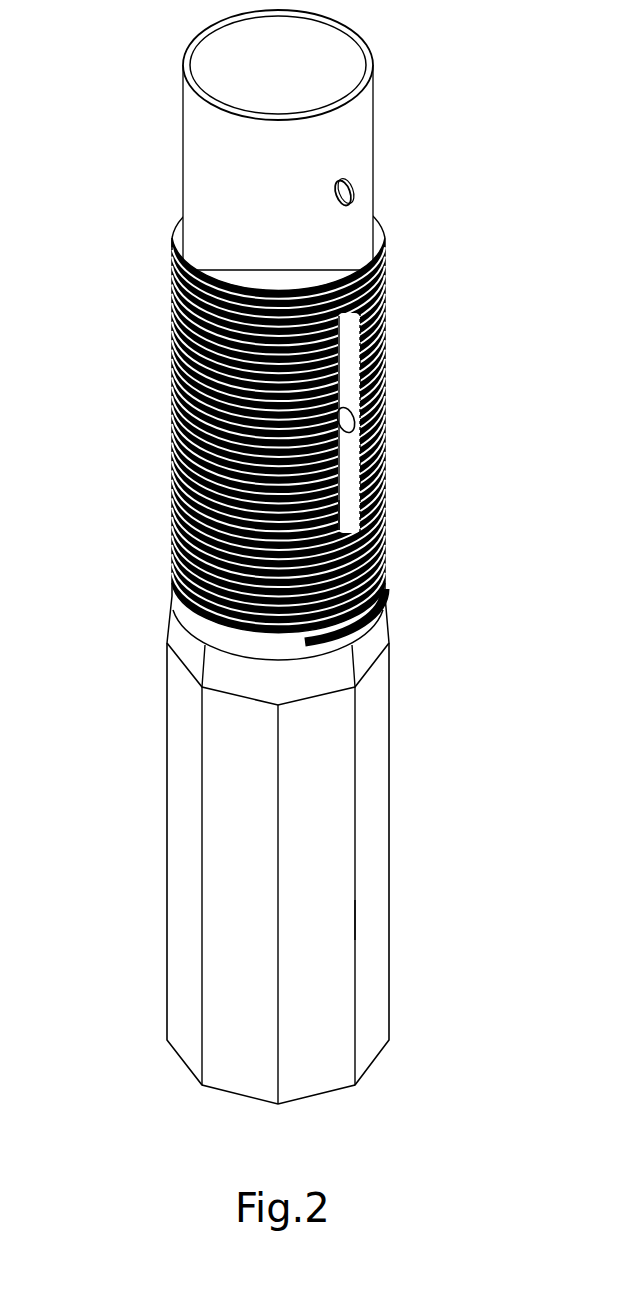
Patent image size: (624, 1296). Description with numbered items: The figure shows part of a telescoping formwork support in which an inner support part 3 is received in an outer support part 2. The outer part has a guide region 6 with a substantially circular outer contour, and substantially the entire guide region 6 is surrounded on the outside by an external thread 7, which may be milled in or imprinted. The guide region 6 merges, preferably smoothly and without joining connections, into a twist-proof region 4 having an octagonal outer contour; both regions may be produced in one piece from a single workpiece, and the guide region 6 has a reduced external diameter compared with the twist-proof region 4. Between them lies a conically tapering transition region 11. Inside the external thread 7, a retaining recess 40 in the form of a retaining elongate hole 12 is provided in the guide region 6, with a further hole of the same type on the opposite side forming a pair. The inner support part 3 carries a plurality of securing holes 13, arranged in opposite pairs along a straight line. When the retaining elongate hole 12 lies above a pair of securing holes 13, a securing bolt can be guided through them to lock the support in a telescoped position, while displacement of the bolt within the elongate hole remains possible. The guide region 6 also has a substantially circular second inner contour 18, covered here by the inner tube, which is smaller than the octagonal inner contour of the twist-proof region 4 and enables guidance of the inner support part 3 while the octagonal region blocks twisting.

The outer support part 2 is at (377, 848).
The inner support part 3 is at (342, 137).
The twist-proof region 4 is at (355, 917).
The guide region 6 is at (410, 428).
The external thread 7 is at (172, 415).
The transition region 11 is at (367, 652).
The retaining elongate hole 12 is at (345, 505).
The securing hole 13 is at (383, 338).
The second inner contour 18 is at (173, 235).
The retaining recess 40 is at (350, 472).